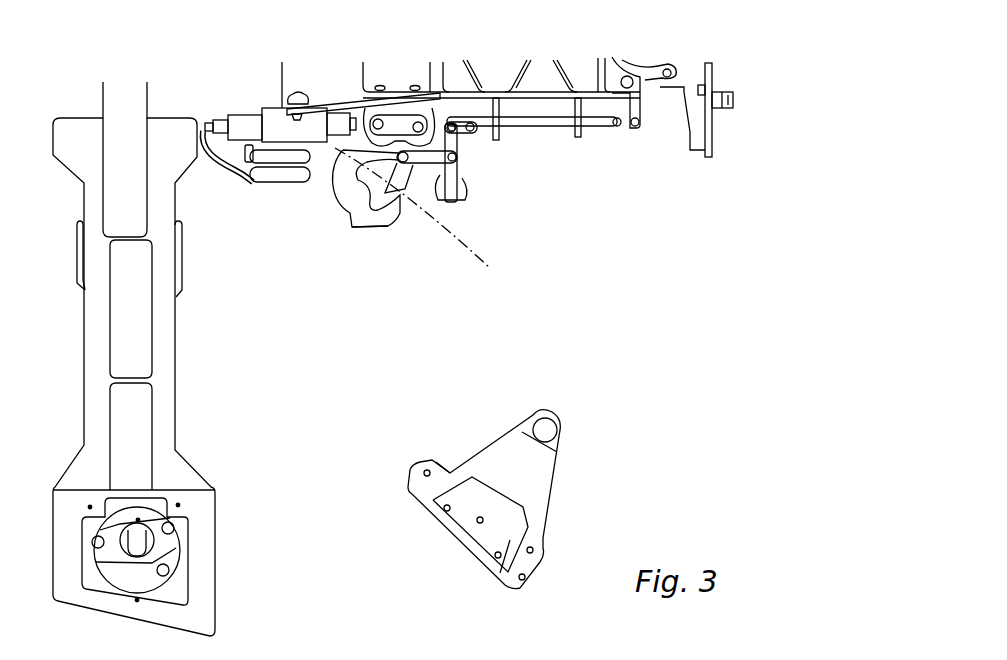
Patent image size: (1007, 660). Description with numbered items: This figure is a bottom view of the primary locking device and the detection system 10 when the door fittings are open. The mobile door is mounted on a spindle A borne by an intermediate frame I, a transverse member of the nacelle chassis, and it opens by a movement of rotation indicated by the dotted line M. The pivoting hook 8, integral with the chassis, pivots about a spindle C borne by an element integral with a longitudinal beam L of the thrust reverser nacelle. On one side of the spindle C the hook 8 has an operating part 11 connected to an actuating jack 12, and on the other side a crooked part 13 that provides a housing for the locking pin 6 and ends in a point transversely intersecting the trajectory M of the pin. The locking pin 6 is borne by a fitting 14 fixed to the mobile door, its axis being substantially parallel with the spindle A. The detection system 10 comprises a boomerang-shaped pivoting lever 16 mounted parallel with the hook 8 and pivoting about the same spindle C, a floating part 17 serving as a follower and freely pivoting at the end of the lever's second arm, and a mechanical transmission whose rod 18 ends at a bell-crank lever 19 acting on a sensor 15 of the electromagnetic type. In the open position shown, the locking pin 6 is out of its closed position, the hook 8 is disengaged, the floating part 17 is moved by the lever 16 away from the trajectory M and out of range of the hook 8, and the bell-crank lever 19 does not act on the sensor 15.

The intermediate frame I is at (123, 310).
The spindle A is at (137, 543).
The actuating jack 12 is at (258, 100).
The longitudinal beam L is at (500, 62).
The bell-crank lever 19 is at (650, 65).
The sensor 15 is at (697, 148).
The rod 18 is at (567, 133).
The detection system 10 is at (527, 143).
The floating part 17 is at (462, 160).
The operating part 11 is at (440, 113).
The pivoting lever 16 is at (400, 222).
The pivoting hook 8 is at (335, 186).
The crooked part 13 is at (358, 224).
The spindle C is at (350, 150).
The trajectory of the pin M is at (420, 214).
The fitting 14 is at (543, 487).
The locking pin 6 is at (548, 424).